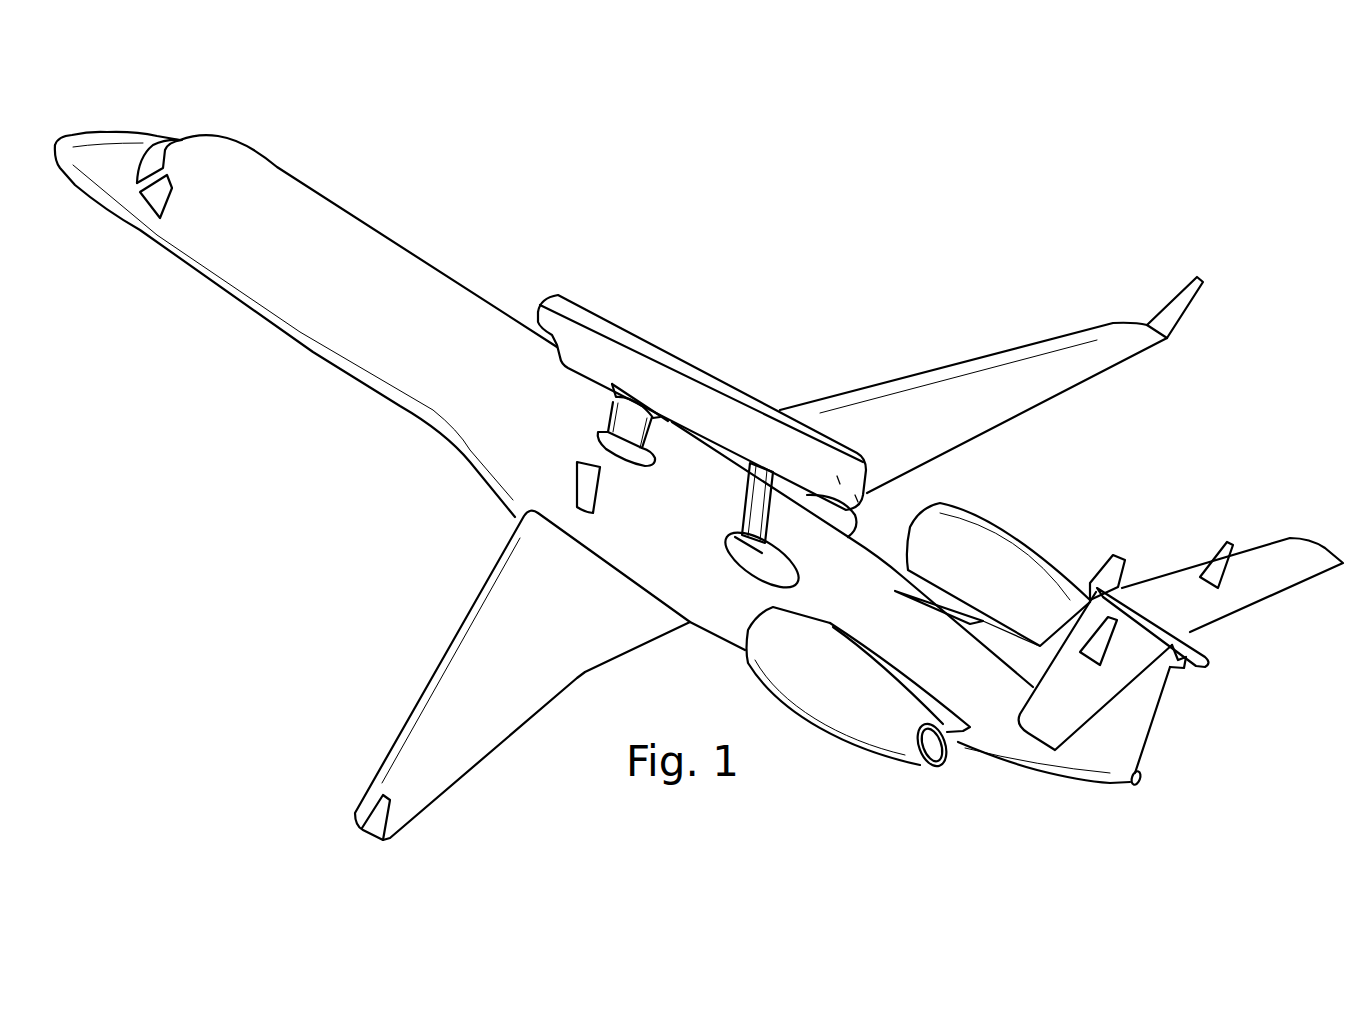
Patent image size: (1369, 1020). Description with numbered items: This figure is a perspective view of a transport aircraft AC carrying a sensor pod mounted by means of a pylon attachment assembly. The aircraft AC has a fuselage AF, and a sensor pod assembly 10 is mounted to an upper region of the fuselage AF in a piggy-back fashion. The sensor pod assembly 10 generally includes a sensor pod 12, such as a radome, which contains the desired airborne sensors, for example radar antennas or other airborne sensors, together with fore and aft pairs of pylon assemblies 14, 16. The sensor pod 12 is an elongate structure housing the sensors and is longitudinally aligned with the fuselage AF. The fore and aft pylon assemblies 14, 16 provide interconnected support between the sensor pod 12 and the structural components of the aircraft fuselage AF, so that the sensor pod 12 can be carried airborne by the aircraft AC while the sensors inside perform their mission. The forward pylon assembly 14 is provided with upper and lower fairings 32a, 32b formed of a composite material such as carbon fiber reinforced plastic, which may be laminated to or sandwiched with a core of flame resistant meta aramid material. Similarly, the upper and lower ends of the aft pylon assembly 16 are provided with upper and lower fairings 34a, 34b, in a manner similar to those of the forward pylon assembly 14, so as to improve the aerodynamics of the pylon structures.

The transport aircraft AC is at (817, 192).
The fuselage AF is at (309, 270).
The sensor pod assembly 10 is at (533, 348).
The sensor pod 12 is at (643, 348).
The forward pylon assembly 14 is at (612, 418).
The aft pylon assembly 16 is at (742, 503).
The upper fairing 32a is at (612, 390).
The lower fairing 32b is at (626, 452).
The upper fairing 34a is at (753, 463).
The lower fairing 34b is at (753, 538).